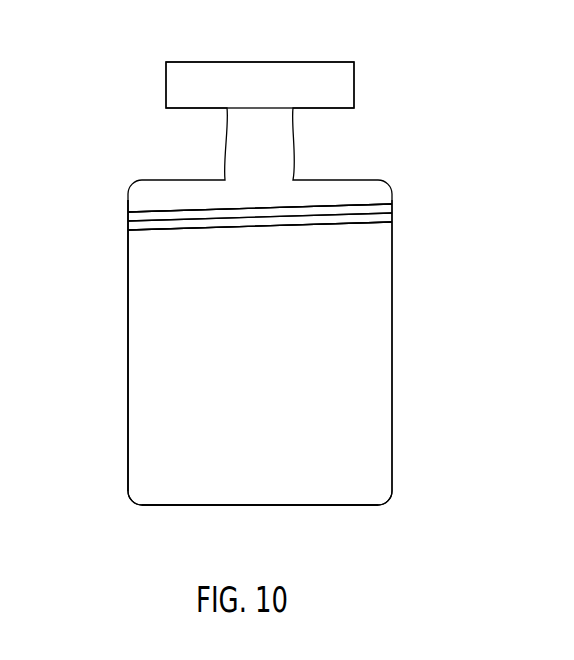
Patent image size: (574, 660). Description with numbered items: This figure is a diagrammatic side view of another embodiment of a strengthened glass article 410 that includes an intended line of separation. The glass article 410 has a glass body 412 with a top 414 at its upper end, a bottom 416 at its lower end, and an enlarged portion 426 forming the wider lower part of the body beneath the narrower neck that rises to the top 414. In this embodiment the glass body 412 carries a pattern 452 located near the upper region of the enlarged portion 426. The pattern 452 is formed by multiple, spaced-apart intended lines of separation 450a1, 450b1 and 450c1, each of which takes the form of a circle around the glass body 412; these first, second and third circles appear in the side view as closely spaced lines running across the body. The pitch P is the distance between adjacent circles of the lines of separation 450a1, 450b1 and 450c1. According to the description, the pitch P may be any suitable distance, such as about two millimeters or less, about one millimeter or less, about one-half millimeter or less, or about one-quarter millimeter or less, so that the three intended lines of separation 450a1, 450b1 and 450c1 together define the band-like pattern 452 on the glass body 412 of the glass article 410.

The glass article 410 is at (369, 51).
The top 414 is at (311, 48).
The glass body 412 is at (413, 378).
The enlarged portion 426 is at (125, 413).
The bottom 416 is at (266, 514).
The pattern 452 is at (124, 222).
The intended line of separation 450a1 is at (177, 211).
The intended line of separation 450b1 is at (290, 207).
The intended line of separation 450c1 is at (325, 227).
The pitch P is at (193, 198).